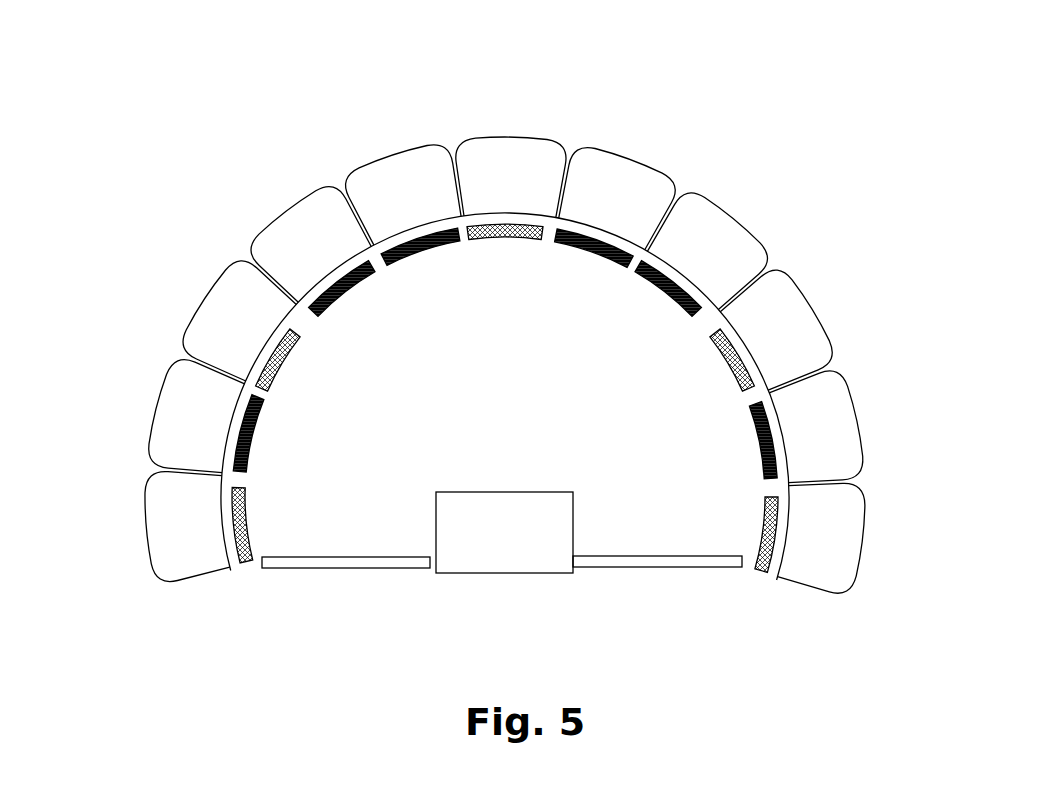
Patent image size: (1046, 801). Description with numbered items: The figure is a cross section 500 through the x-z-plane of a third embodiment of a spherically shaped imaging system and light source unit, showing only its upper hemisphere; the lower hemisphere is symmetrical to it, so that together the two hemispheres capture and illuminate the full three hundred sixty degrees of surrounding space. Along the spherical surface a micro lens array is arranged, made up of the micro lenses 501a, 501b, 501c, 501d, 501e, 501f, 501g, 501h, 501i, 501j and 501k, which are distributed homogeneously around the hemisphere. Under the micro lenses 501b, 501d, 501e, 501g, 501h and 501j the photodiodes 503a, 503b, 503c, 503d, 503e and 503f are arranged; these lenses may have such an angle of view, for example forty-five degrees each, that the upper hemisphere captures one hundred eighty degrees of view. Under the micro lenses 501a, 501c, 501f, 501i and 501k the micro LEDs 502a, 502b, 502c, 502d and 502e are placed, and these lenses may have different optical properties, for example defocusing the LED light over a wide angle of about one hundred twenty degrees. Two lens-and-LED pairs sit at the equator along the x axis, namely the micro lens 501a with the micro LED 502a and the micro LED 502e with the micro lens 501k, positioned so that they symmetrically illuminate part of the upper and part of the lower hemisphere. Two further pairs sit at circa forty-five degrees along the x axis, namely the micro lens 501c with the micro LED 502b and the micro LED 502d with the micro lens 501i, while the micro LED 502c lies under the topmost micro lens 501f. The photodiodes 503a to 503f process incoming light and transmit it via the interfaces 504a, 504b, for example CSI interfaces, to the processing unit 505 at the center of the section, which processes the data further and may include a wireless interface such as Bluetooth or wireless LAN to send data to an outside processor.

The cross section 500 is at (572, 53).
The micro lens 501a is at (150, 503).
The micro lens 501b is at (160, 402).
The micro lens 501c is at (200, 293).
The micro lens 501d is at (278, 222).
The micro lens 501e is at (373, 167).
The micro lens 501f is at (490, 143).
The micro lens 501g is at (633, 157).
The micro lens 501h is at (738, 227).
The micro lens 501i is at (815, 318).
The micro lens 501j is at (840, 412).
The micro lens 501k is at (863, 522).
The micro LED 502a is at (247, 600).
The micro LED 502b is at (290, 355).
The micro LED 502c is at (495, 238).
The micro LED 502d is at (743, 392).
The micro LED 502e is at (762, 595).
The photodiode 503a is at (252, 437).
The photodiode 503b is at (329, 312).
The photodiode 503c is at (407, 257).
The photodiode 503d is at (580, 250).
The photodiode 503e is at (690, 318).
The photodiode 503f is at (762, 498).
The interface 504a is at (353, 568).
The interface 504b is at (650, 567).
The processing unit 505 is at (512, 573).